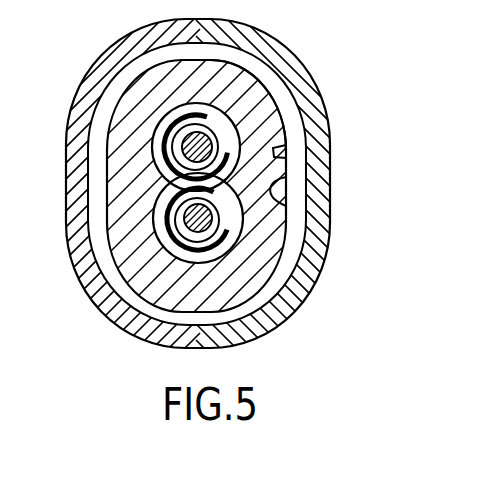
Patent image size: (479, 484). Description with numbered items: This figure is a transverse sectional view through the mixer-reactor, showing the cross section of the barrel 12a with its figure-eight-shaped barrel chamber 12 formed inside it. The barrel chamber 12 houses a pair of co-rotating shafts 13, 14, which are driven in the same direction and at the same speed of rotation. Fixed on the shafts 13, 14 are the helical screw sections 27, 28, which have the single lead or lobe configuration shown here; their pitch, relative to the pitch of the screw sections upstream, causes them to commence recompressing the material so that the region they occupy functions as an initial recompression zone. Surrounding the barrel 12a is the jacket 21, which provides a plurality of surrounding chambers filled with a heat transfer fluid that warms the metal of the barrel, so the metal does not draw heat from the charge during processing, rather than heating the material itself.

The jacket 21 is at (282, 56).
The barrel chamber 12 is at (283, 195).
The barrel 12a is at (283, 113).
The shaft 13 is at (207, 141).
The shaft 14 is at (228, 233).
The helical screw section 28 is at (220, 147).
The helical screw section 27 is at (228, 237).